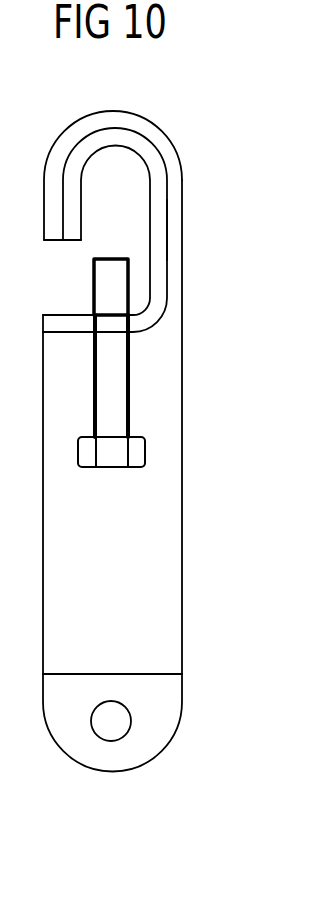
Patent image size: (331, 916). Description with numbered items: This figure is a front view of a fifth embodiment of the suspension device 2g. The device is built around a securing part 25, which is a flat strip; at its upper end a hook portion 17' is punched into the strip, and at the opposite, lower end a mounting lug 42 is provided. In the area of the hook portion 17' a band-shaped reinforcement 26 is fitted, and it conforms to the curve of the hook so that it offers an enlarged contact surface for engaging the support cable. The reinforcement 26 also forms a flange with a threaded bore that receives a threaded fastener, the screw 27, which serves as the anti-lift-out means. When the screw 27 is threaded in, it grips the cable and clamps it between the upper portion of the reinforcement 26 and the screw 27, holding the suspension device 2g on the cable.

The suspension device 2g is at (187, 513).
The hook portion 17' is at (141, 214).
The band-shaped reinforcement 26 is at (162, 202).
The screw 27 is at (107, 288).
The securing part 25 is at (165, 412).
The mounting lug 42 is at (155, 742).